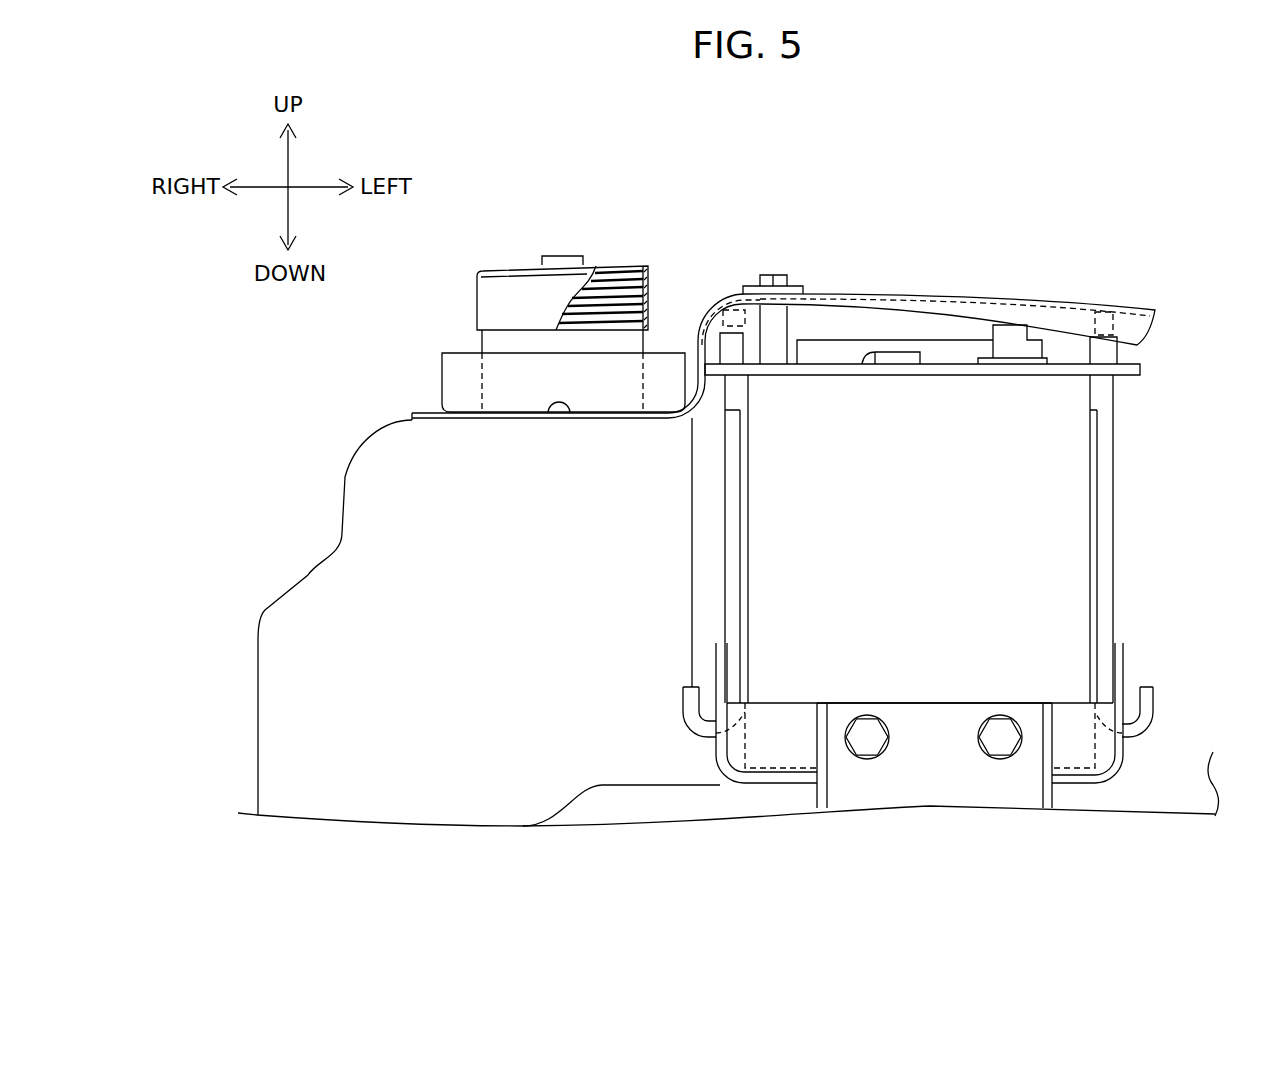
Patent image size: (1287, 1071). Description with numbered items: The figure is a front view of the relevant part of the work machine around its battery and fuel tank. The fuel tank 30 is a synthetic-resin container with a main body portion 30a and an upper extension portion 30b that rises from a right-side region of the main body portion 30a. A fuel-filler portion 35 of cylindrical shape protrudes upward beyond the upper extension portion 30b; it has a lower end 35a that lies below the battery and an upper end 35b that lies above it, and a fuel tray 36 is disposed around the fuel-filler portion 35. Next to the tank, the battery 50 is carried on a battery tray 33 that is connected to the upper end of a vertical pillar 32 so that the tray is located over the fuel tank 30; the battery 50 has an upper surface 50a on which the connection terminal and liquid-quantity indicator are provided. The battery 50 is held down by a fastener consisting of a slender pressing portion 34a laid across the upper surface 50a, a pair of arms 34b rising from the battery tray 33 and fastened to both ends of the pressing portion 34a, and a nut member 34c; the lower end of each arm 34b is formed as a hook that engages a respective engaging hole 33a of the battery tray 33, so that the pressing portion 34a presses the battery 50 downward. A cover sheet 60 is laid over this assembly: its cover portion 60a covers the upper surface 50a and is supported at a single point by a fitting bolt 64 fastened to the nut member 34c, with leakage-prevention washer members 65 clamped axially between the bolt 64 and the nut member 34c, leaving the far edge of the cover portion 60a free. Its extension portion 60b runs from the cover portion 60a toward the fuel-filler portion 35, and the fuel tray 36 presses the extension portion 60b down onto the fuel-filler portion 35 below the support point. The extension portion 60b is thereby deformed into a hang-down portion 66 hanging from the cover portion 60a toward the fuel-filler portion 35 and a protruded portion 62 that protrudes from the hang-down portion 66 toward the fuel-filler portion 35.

The fuel tank 30 is at (298, 514).
The main body portion 30a is at (372, 812).
The upper extension portion 30b is at (395, 453).
The vertical pillar 32 is at (938, 790).
The battery tray 33 is at (762, 742).
The engaging hole 33a is at (678, 722).
The pressing portion 34a is at (957, 350).
The arm 34b is at (733, 557).
The nut member 34c is at (774, 355).
The fuel-filler portion 35 is at (517, 266).
The lower end 35a is at (560, 416).
The upper end 35b is at (612, 268).
The fuel tray 36 is at (440, 373).
The battery 50 is at (1070, 492).
The upper surface 50a is at (880, 365).
The cover sheet 60 is at (998, 273).
The cover portion 60a is at (893, 298).
The extension portion 60b is at (645, 423).
The protruded portion 62 is at (503, 420).
The fitting bolt 64 is at (767, 274).
The washer member 65 is at (808, 292).
The hang-down portion 66 is at (697, 336).